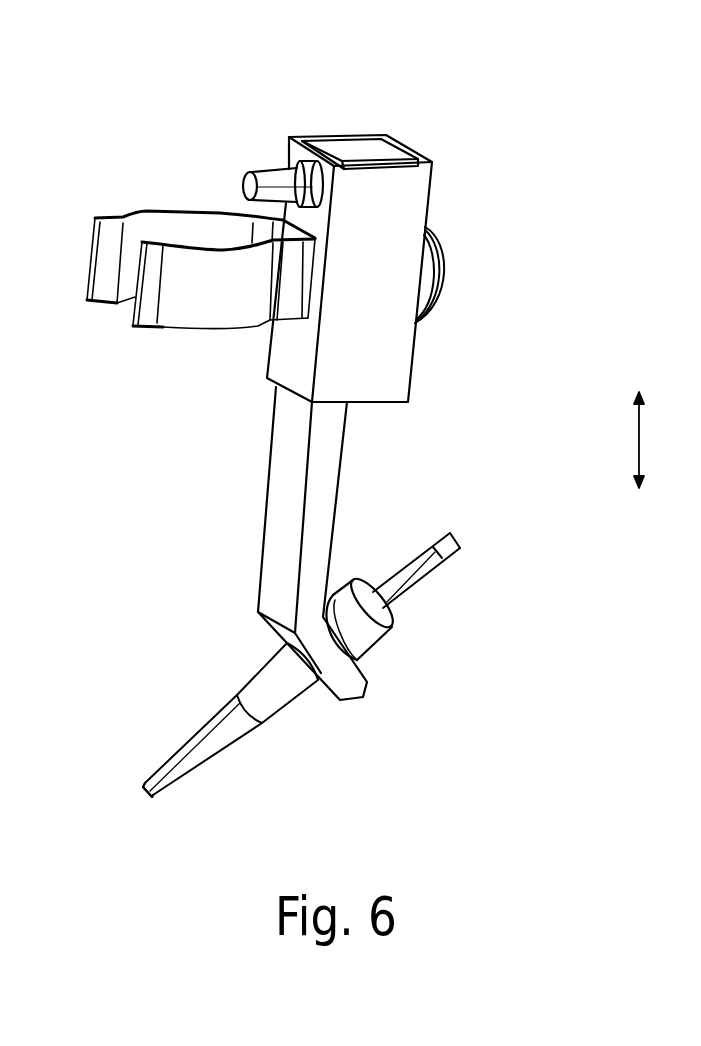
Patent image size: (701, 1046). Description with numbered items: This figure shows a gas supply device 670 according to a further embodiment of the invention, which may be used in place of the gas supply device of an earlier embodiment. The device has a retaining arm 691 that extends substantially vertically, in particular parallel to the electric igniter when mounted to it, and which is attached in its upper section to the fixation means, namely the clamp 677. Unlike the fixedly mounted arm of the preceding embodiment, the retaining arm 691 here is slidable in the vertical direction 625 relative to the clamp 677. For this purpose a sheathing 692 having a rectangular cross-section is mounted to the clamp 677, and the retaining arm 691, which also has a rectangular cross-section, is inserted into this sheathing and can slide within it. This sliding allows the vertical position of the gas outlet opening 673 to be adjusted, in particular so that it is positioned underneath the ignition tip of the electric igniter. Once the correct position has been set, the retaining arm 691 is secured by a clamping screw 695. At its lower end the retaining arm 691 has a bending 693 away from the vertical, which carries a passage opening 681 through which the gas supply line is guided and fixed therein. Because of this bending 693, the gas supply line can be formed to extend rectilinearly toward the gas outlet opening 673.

The gas supply device 670 is at (624, 134).
The sheathing 692 is at (418, 183).
The clamping screw 695 is at (432, 228).
The clamp 677 is at (207, 333).
The retaining arm 691 is at (317, 477).
The bending 693 is at (245, 648).
The gas outlet opening 673 is at (145, 788).
The passage opening 681 is at (318, 688).
The vertical direction 625 is at (638, 442).